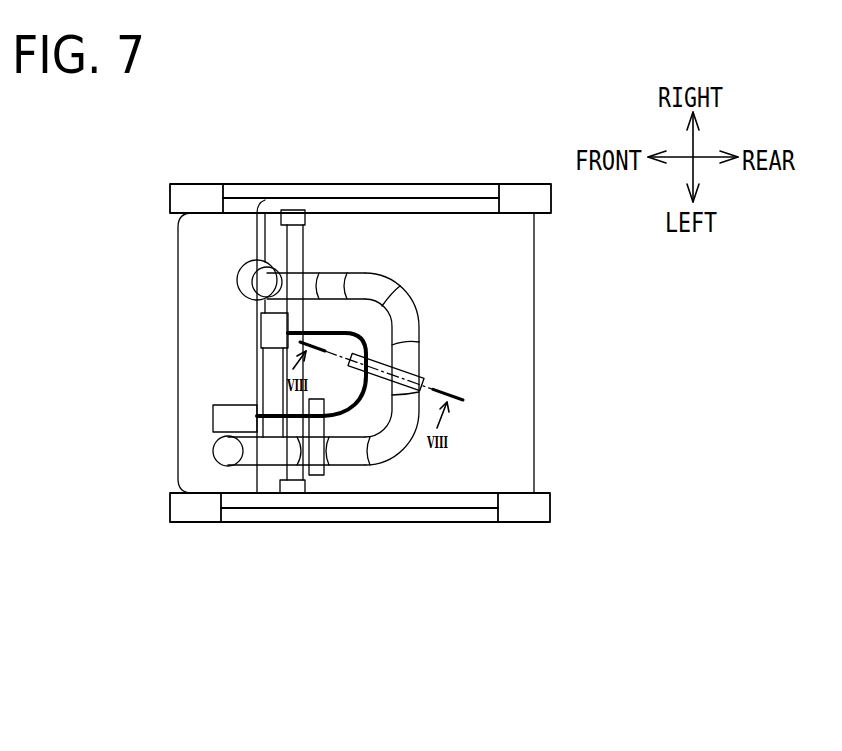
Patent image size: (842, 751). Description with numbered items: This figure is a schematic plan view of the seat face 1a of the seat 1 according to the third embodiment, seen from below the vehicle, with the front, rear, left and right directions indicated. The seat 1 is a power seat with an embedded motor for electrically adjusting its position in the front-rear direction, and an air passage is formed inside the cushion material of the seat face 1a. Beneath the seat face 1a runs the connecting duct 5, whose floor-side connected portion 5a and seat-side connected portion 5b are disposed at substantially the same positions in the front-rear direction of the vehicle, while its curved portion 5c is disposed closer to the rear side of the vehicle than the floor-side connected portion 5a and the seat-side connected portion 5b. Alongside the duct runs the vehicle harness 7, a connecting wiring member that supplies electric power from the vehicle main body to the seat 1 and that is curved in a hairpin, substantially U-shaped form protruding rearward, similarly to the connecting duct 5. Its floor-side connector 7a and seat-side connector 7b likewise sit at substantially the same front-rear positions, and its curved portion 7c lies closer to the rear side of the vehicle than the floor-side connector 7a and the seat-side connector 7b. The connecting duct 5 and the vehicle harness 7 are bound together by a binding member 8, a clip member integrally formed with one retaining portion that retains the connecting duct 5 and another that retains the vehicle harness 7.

The seat 1 is at (535, 305).
The seat face 1a is at (518, 408).
The connecting duct 5 is at (380, 441).
The floor-side connected portion 5a is at (216, 460).
The seat-side connected portion 5b is at (246, 262).
The curved portion 5c is at (421, 352).
The vehicle harness 7 is at (323, 331).
The floor-side connector 7a is at (213, 416).
The seat-side connector 7b is at (261, 330).
The curved portion 7c is at (385, 354).
The binding member 8 is at (313, 476).